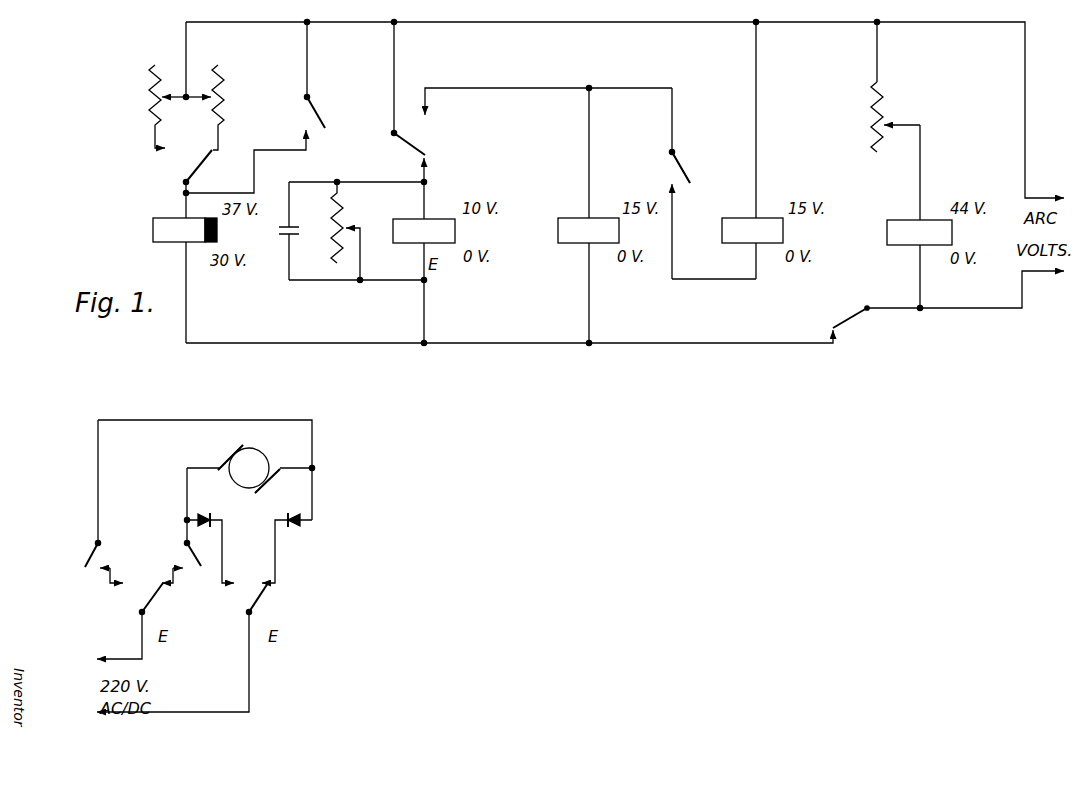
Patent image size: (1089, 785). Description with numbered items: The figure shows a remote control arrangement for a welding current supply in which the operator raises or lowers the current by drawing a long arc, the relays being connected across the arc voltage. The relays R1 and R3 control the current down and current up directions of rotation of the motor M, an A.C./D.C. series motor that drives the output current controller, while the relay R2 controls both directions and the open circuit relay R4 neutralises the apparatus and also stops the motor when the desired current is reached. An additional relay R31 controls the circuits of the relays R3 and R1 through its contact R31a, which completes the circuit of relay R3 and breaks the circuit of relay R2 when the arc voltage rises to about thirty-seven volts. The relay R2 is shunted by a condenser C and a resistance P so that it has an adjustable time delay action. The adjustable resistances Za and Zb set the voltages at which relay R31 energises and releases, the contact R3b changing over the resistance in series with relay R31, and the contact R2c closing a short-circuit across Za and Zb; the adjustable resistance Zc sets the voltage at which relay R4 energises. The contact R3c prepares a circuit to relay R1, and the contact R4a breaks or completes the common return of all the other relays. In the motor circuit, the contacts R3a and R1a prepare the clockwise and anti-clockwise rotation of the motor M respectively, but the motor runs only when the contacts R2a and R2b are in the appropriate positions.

The adjustable resistance Zb is at (153, 106).
The adjustable resistance Za is at (218, 107).
The adjustable resistance Zc is at (895, 117).
The contact of relay R3 R3b is at (223, 163).
The contact of relay R2 R2c is at (330, 111).
The relay R31 is at (185, 268).
The contact of relay R31 R31a is at (434, 155).
The condenser C is at (281, 231).
The resistance P is at (345, 231).
The relay R2 is at (424, 262).
The relay R3 is at (588, 215).
The contact of relay R3 R3c is at (712, 183).
The relay R1 is at (752, 248).
The open circuit relay R4 is at (919, 218).
The contact of relay R4 R4a is at (860, 324).
The motor M is at (249, 469).
The contact of relay R3 R3a is at (86, 563).
The contact of relay R1 R1a is at (175, 563).
The contact of relay R2 R2a is at (142, 621).
The contact of relay R2 R2b is at (197, 647).